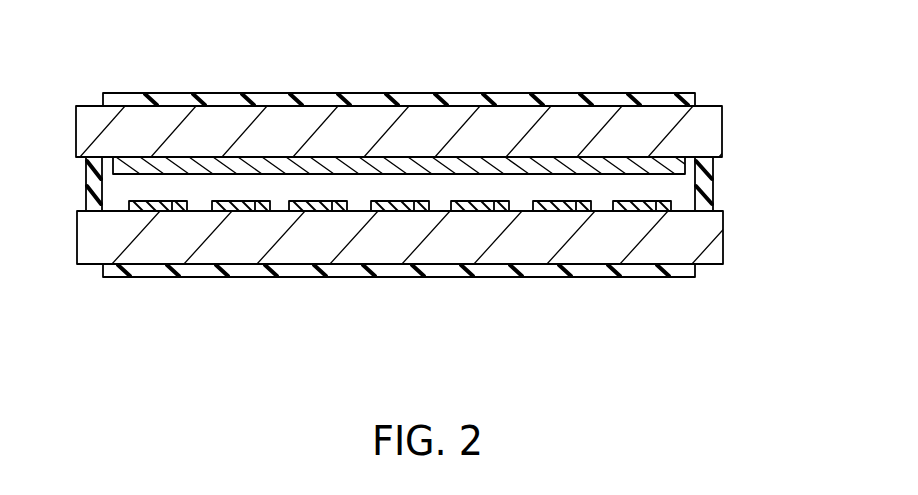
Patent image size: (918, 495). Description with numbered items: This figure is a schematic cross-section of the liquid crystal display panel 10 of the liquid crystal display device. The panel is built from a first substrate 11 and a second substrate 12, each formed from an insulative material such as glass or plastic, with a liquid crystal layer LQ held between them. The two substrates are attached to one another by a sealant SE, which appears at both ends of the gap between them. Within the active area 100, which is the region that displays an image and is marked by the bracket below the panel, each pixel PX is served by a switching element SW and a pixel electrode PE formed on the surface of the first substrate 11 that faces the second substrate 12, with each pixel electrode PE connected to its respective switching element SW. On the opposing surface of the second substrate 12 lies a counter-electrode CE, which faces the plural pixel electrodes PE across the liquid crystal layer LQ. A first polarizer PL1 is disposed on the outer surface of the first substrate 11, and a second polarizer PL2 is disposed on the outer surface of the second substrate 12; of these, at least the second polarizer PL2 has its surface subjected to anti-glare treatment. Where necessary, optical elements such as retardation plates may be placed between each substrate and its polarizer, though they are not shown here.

The liquid crystal display panel 10 is at (422, 193).
The active area 100 is at (422, 208).
The first substrate 11 is at (724, 238).
The second substrate 12 is at (723, 128).
The first polarizer PL1 is at (695, 268).
The second polarizer PL2 is at (657, 92).
The sealant SE is at (86, 190).
The counter-electrode CE is at (385, 170).
The liquid crystal layer LQ is at (547, 185).
The pixel PX is at (317, 191).
The pixel electrode PE is at (310, 206).
The switching element SW is at (340, 206).